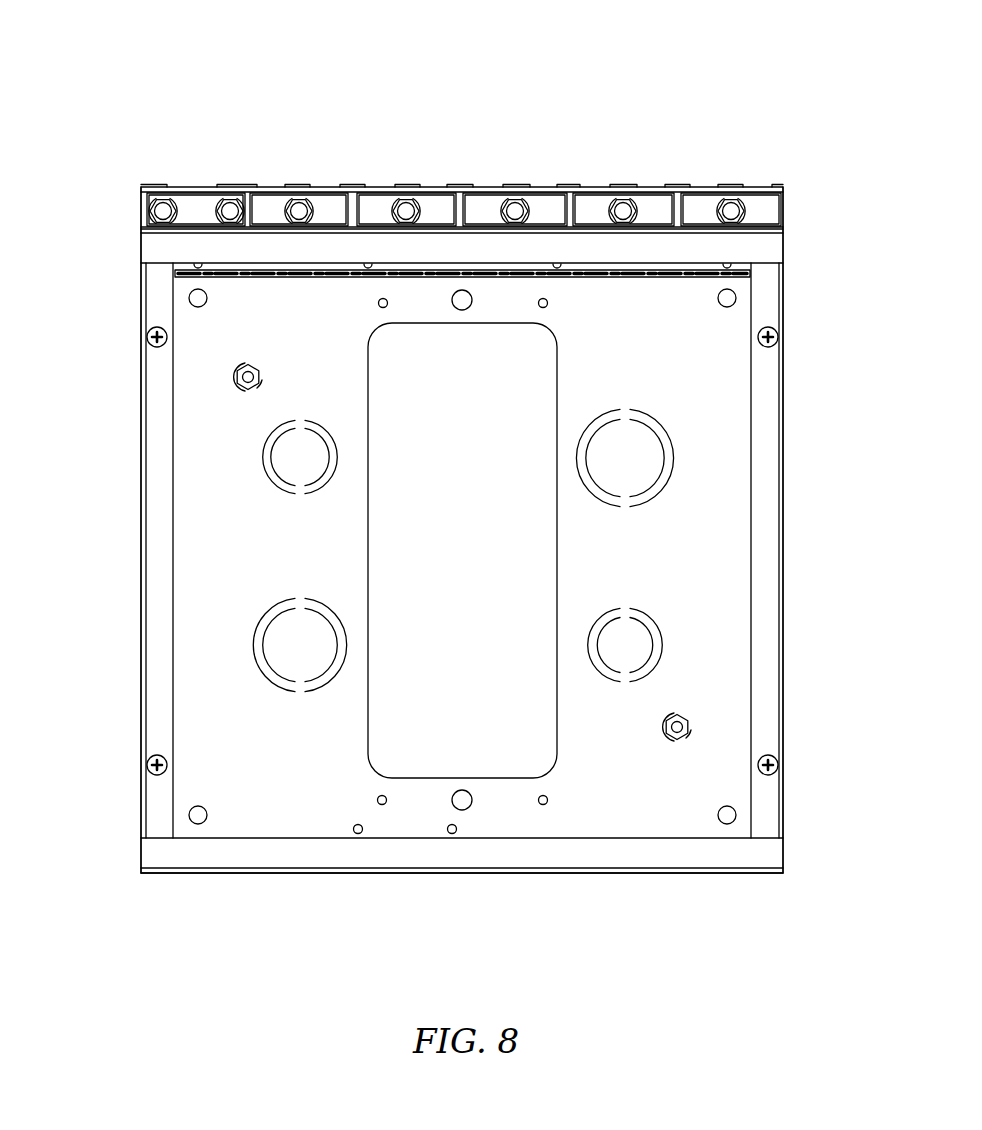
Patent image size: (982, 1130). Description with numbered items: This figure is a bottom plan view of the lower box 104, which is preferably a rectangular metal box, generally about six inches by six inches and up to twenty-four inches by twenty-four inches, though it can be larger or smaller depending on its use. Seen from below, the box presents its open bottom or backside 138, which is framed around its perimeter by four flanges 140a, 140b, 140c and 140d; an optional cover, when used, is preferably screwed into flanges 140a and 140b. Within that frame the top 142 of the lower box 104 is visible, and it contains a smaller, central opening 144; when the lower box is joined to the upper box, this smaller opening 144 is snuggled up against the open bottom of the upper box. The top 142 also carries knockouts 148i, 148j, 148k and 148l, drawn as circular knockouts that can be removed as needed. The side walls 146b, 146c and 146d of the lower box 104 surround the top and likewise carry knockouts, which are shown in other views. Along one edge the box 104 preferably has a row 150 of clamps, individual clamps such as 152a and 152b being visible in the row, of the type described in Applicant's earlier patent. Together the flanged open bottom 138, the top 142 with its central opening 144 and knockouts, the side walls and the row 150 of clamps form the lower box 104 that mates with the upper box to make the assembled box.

The lower box 104 is at (239, 102).
The row of clamps 150 is at (462, 163).
The clamp 152a is at (708, 188).
The clamp 152b is at (597, 188).
The flange 140a is at (608, 246).
The flange 140b is at (765, 523).
The flange 140c is at (648, 850).
The flange 140d is at (157, 538).
The side wall 146b is at (797, 428).
The side wall 146c is at (426, 887).
The side wall 146d is at (130, 445).
The open bottom 138 is at (257, 793).
The top 142 is at (304, 549).
The central opening 144 is at (470, 667).
The knockout 148i is at (628, 463).
The knockout 148j is at (302, 460).
The knockout 148k is at (312, 653).
The knockout 148l is at (623, 647).